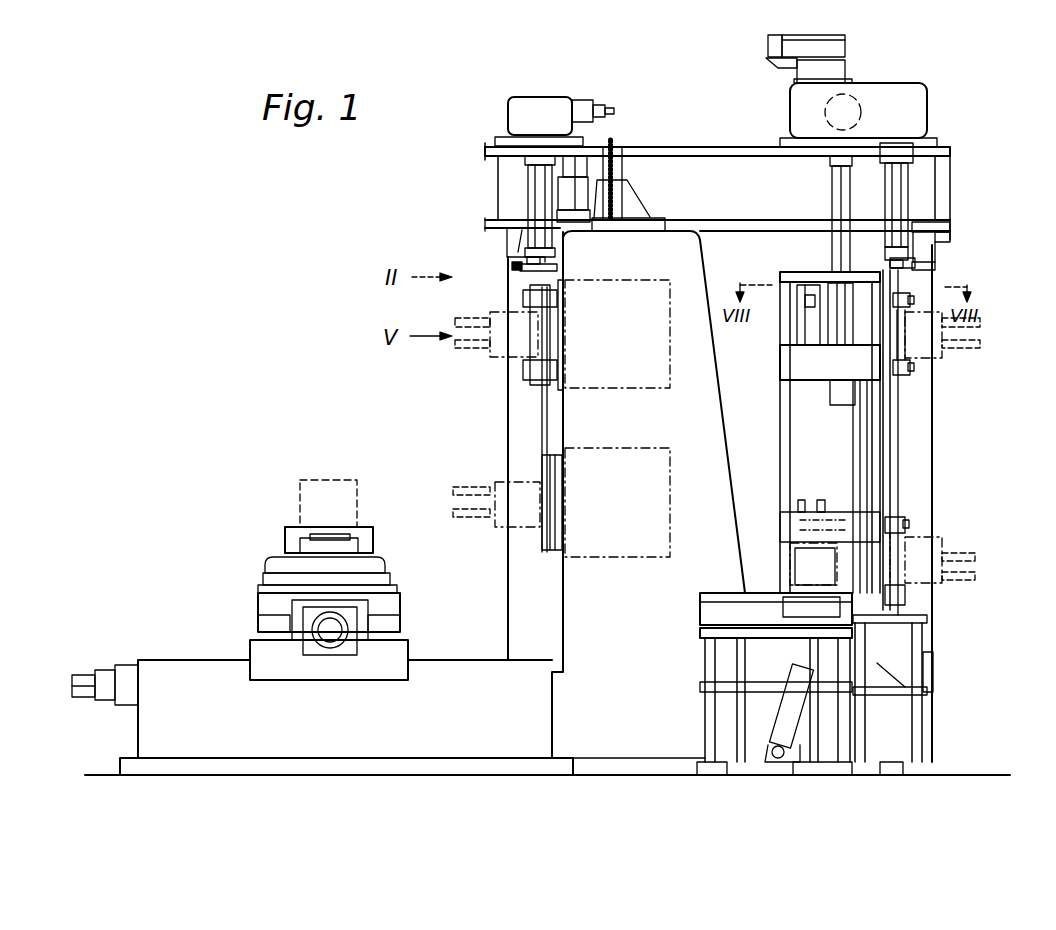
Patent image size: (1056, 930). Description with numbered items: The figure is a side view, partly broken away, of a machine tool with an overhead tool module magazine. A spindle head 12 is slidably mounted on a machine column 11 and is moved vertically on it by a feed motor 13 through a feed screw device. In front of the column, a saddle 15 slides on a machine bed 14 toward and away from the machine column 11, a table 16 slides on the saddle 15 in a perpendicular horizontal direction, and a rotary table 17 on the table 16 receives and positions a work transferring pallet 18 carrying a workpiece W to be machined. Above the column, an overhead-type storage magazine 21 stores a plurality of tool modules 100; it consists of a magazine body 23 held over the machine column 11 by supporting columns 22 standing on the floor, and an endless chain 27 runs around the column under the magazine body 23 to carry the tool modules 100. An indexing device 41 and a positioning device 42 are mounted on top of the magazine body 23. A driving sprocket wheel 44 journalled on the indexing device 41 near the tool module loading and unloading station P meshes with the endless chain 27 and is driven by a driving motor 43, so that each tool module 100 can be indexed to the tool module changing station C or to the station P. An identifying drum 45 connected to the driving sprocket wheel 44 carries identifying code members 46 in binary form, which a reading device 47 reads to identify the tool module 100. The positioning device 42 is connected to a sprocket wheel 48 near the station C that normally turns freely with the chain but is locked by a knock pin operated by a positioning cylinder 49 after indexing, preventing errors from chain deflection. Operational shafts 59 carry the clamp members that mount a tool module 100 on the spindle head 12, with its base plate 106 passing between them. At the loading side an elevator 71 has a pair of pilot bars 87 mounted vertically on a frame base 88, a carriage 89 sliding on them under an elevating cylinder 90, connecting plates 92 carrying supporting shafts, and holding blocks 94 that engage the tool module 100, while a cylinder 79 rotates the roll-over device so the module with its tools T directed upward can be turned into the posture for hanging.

The machine column 11 is at (720, 432).
The spindle head 12 is at (608, 375).
The feed motor 13 is at (590, 148).
The machine bed 14 is at (212, 685).
The saddle 15 is at (327, 668).
The table 16 is at (265, 605).
The rotary table 17 is at (372, 562).
The work transferring pallet 18 is at (288, 538).
The storage magazine 21 is at (702, 130).
The supporting columns 22 is at (510, 563).
The magazine body 23 is at (752, 232).
The endless chain 27 is at (508, 260).
The indexing device 41 is at (928, 115).
The positioning device 42 is at (508, 115).
The driving motor 43 is at (825, 115).
The driving sprocket wheel 44 is at (885, 266).
The identifying drum 45 is at (800, 35).
The identifying code members 46 is at (847, 45).
The reading device 47 is at (770, 62).
The sprocket wheel 48 is at (568, 283).
The positioning cylinder 49 is at (608, 104).
The operational shafts 59 is at (700, 610).
The elevator 71 is at (892, 397).
The cylinder 79 is at (790, 722).
The pilot bars 87 is at (856, 440).
The frame base 88 is at (781, 400).
The carriage 89 is at (858, 340).
The elevating cylinder 90 is at (832, 192).
The connecting plates 92 is at (802, 320).
The holding block 94 is at (910, 300).
The tool module 100 is at (502, 360).
The base plate 106 is at (803, 595).
The tool module changing station C is at (525, 345).
The tool module loading and unloading station P is at (928, 343).
The tools T is at (782, 520).
The workpiece W is at (337, 487).